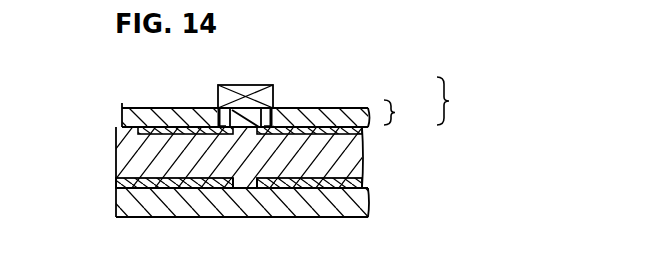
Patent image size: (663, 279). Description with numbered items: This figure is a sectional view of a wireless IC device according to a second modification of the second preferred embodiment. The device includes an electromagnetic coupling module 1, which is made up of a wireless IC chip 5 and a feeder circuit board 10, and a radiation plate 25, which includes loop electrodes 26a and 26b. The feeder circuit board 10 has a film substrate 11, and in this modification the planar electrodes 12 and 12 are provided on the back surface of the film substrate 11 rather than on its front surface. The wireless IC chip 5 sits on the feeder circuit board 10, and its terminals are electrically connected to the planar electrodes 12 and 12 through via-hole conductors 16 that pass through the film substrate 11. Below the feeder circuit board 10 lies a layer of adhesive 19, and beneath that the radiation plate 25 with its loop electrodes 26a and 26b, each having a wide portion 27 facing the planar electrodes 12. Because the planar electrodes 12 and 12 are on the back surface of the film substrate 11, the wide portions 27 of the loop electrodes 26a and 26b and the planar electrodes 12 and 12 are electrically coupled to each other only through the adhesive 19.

The electromagnetic coupling module 1 is at (451, 101).
The feeder circuit board 10 is at (403, 113).
The film substrate 11 is at (300, 108).
The planar electrode 12 is at (163, 108).
The wireless IC chip 5 is at (244, 85).
The via-hole conductor 16 is at (215, 108).
The adhesive 19 is at (116, 155).
The radiation plate 25 is at (243, 194).
The loop electrode 26a is at (153, 220).
The loop electrode 26b is at (147, 186).
The wide portion 27 is at (217, 187).